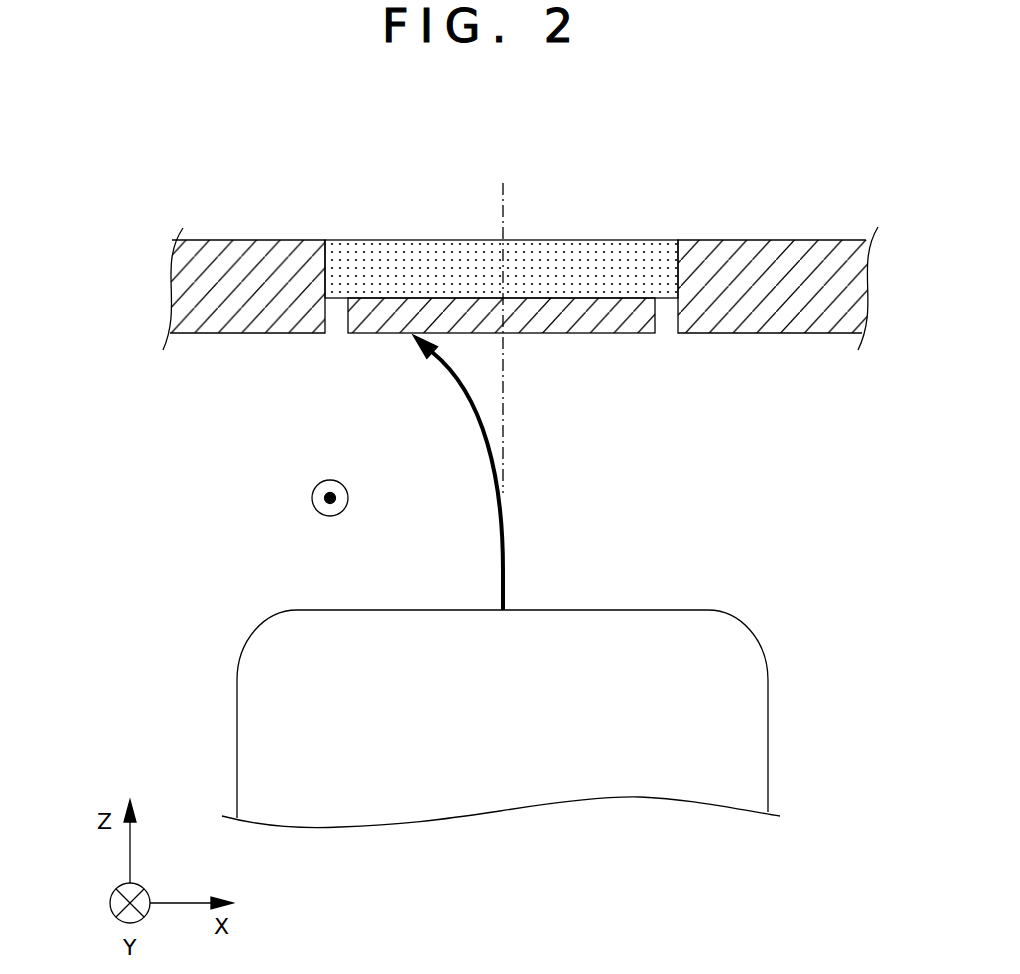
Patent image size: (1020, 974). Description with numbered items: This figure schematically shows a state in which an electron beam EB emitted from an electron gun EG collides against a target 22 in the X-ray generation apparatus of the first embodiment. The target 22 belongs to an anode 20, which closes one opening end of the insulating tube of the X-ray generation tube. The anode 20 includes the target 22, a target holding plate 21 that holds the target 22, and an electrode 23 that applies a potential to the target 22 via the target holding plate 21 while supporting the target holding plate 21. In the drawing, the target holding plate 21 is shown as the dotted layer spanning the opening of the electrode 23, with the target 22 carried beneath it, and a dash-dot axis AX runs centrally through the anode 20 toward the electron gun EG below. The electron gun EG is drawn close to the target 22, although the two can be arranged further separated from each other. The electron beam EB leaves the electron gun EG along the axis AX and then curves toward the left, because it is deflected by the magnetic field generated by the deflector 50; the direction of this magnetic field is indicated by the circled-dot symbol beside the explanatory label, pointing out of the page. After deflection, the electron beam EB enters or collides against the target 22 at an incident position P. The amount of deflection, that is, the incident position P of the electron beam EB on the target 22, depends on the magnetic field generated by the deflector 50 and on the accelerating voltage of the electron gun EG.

The anode 20 is at (520, 241).
The target holding plate 21 is at (617, 250).
The target 22 is at (628, 313).
The electrode 23 is at (712, 250).
The axis AX is at (500, 207).
The electron beam EB is at (505, 552).
The incident position P is at (413, 341).
The electron gun EG is at (770, 688).
The deflector 50 is at (312, 498).